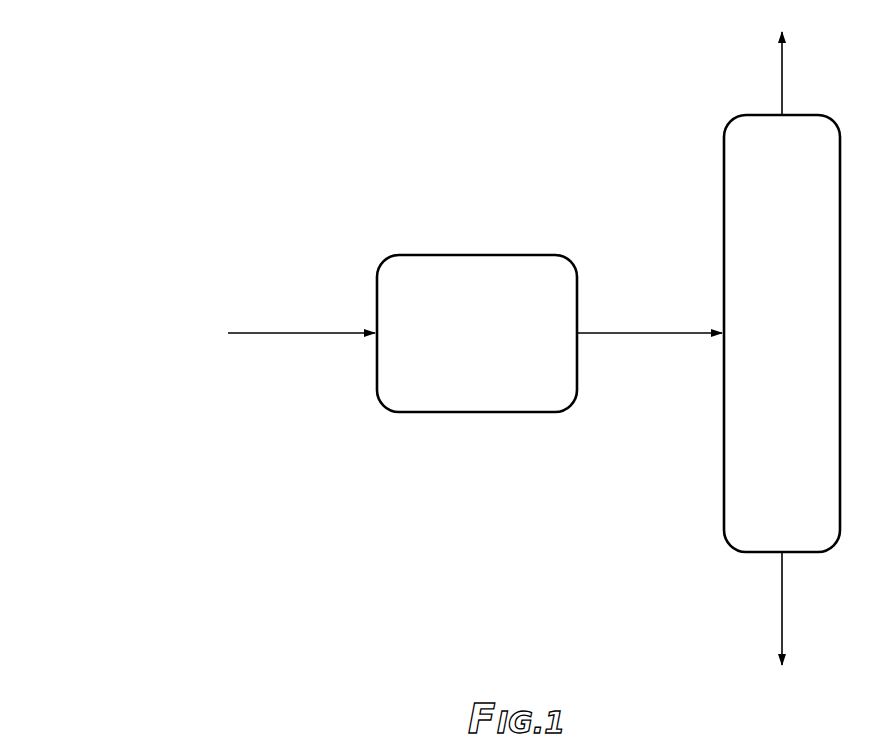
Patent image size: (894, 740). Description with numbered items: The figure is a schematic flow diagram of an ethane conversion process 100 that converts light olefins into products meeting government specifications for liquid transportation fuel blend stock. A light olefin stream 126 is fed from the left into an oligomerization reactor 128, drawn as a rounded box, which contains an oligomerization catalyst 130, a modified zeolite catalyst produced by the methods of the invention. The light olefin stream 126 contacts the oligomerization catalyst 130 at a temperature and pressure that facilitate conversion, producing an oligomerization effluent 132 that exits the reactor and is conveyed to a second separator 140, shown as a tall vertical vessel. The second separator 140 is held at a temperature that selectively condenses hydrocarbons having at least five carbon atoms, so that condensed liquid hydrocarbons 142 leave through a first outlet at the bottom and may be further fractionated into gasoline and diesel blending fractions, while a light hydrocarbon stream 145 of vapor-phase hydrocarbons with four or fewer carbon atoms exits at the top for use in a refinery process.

The ethane conversion process 100 is at (122, 103).
The light olefin stream 126 is at (256, 331).
The oligomerization reactor 128 is at (373, 244).
The oligomerization catalyst 130 is at (500, 348).
The oligomerization effluent 132 is at (652, 331).
The second separator 140 is at (806, 347).
The condensed liquid hydrocarbons 142 is at (783, 608).
The light hydrocarbon stream 145 is at (783, 64).